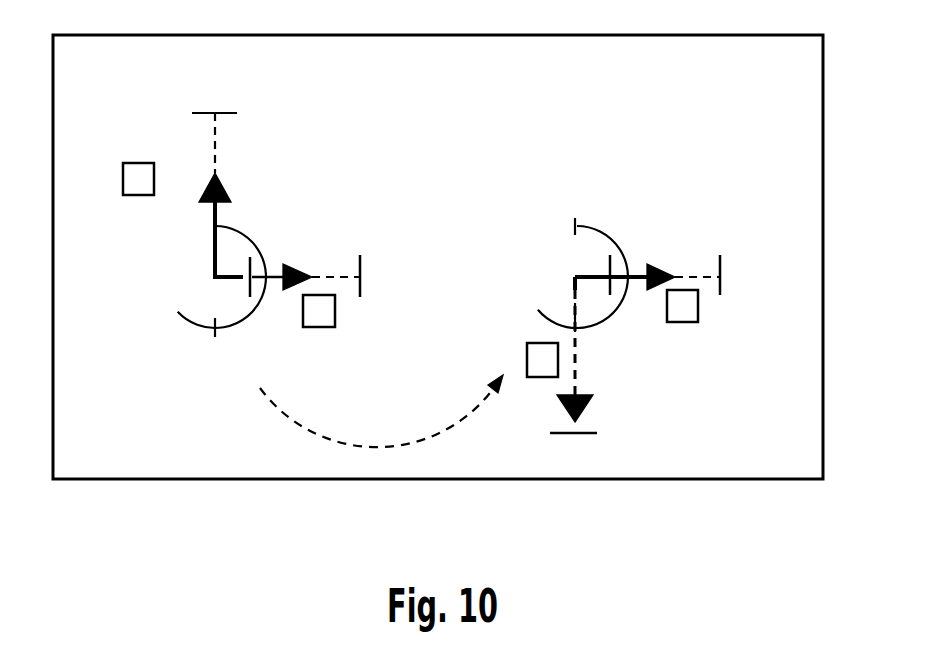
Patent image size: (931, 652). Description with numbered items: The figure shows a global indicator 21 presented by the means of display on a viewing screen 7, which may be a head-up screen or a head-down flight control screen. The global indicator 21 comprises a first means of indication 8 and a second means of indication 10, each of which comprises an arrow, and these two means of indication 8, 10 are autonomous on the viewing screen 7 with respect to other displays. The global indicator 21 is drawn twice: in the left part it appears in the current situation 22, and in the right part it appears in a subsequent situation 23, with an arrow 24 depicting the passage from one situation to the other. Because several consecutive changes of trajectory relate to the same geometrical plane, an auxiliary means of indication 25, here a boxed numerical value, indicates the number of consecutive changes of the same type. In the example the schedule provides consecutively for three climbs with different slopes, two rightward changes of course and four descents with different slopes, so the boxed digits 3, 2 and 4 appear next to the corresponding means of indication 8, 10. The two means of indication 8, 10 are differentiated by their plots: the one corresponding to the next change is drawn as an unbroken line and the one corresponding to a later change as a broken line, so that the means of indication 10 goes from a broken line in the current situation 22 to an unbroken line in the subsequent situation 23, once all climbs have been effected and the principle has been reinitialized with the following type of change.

The viewing screen 7 is at (588, 479).
The first means of indication 8 is at (249, 178).
The second means of indication 10 is at (321, 244).
The global indicator 21 is at (323, 156).
The current situation 22 is at (185, 356).
The subsequent situation 23 is at (687, 390).
The arrow 24 is at (333, 438).
The auxiliary means of indication 25 is at (439, 281).
The label box 2 is at (500, 308).
The label box 3 is at (138, 179).
The label box 4 is at (542, 360).